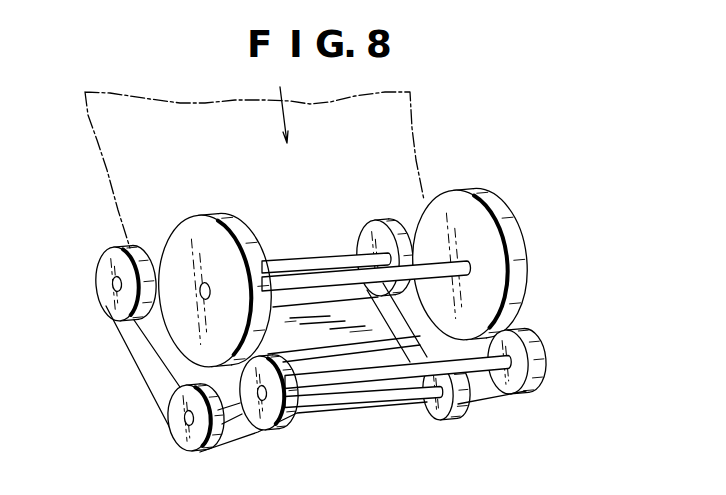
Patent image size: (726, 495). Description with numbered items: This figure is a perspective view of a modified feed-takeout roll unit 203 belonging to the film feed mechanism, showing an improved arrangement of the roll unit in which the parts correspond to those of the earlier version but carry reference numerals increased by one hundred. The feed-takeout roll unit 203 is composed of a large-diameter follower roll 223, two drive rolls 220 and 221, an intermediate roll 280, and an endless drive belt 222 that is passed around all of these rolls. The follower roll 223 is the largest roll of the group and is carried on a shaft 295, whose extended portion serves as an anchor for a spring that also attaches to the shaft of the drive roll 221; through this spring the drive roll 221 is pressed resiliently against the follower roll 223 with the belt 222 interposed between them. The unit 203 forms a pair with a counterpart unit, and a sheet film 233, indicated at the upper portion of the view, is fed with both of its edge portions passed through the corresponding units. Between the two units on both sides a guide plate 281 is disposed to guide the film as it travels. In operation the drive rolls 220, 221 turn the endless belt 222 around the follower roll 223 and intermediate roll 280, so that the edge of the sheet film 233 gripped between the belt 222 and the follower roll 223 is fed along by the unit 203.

The feed-takeout roll unit 203 is at (118, 352).
The drive roll 220 is at (106, 265).
The drive roll 221 is at (272, 418).
The endless drive belt 222 is at (140, 370).
The large-diameter follower roll 223 is at (203, 232).
The sheet film 233 is at (418, 128).
The intermediate roll 280 is at (178, 435).
The guide plate 281 is at (347, 340).
The shaft 295 is at (312, 262).